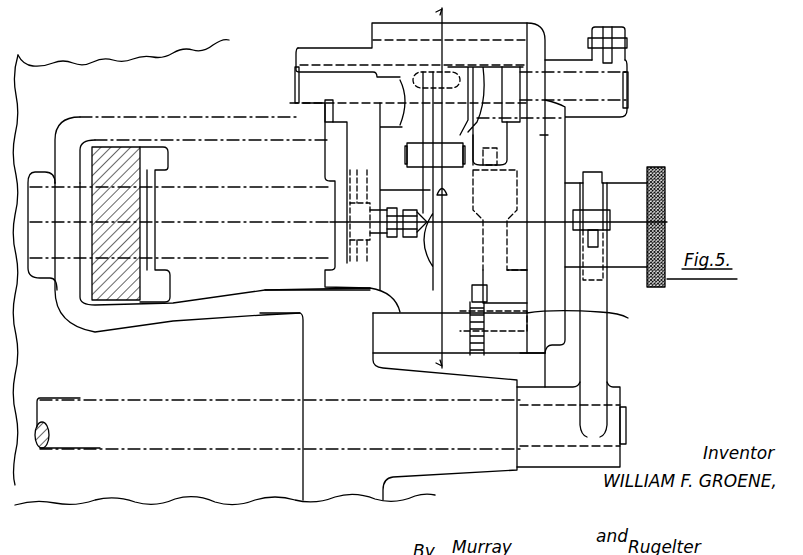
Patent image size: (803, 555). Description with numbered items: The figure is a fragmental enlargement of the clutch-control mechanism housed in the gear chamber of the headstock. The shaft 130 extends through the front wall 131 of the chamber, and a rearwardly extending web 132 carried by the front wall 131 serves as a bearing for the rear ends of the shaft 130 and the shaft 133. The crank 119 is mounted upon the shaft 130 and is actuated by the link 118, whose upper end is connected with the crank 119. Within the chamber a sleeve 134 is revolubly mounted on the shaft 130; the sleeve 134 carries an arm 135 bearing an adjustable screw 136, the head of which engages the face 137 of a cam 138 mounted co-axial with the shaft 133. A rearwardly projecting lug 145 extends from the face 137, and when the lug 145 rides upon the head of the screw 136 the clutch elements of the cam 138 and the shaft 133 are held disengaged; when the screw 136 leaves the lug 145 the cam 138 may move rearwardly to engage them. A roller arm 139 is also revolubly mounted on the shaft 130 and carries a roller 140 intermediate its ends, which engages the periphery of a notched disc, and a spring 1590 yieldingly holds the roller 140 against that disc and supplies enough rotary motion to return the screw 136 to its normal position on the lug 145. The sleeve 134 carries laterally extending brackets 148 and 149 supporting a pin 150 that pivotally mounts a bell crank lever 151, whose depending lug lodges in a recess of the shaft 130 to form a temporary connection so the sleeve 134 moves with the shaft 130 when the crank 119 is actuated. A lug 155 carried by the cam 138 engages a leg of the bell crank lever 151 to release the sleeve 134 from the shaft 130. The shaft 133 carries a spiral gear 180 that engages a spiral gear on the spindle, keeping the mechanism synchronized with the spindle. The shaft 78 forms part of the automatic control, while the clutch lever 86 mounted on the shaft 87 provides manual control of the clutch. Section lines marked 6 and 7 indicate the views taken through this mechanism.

The section line 6 is at (443, 192).
The knurled knob 7 is at (624, 227).
The shaft 78 is at (627, 430).
The clutch lever 86 is at (748, 8).
The shaft 87 is at (671, 6).
The link 118 is at (605, 32).
The crank 119 is at (620, 62).
The shaft 130 is at (630, 85).
The front wall 131 is at (545, 135).
The web 132 is at (176, 310).
The shaft 133 is at (262, 258).
The sleeve 134 is at (408, 82).
The arm 135 is at (357, 143).
The adjustable screw 136 is at (382, 292).
The face 137 is at (427, 227).
The cam 138 is at (437, 237).
The roller arm 139 is at (487, 93).
The roller 140 is at (548, 165).
The lug 145 is at (417, 230).
The bracket 148 is at (397, 115).
The bracket 149 is at (477, 88).
The pin 150 is at (357, 142).
The bell crank lever 151 is at (423, 147).
The lug 155 is at (589, 146).
The spiral gear 180 is at (115, 298).
The spring 1590 is at (616, 310).